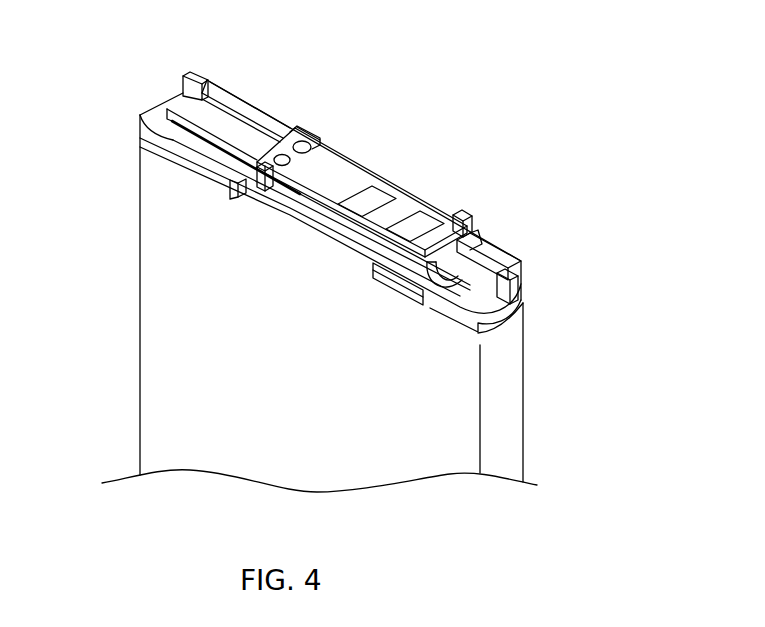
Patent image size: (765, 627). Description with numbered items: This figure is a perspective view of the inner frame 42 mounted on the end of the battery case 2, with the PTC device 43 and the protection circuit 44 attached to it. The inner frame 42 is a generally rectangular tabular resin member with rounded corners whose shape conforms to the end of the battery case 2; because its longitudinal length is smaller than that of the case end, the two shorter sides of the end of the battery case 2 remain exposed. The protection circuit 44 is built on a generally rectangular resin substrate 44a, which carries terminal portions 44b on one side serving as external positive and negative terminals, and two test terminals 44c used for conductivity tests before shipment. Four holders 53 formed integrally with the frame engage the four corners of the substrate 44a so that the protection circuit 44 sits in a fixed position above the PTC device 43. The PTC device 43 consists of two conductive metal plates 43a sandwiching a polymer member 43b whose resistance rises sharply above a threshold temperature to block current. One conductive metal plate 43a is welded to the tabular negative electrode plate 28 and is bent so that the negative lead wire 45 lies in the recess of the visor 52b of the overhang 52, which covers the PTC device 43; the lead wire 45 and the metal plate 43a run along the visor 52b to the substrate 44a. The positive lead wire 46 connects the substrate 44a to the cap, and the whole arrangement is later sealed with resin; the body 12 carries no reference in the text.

The battery case 2 is at (533, 386).
The cell body 12 is at (162, 320).
The negative electrode plate 28 is at (312, 207).
The inner frame 42 is at (493, 242).
The PTC device 43 is at (181, 140).
The conductive metal plate 43a is at (205, 92).
The polymer member 43b is at (183, 150).
The protection circuit 44 is at (368, 163).
The substrate 44a is at (338, 150).
The terminal portions 44b is at (407, 210).
The test terminals 44c is at (282, 166).
The negative lead wire 45 is at (247, 130).
The positive lead wire 46 is at (446, 272).
The overhang 52 is at (272, 122).
The visor 52b is at (233, 201).
The holders 53 is at (462, 222).